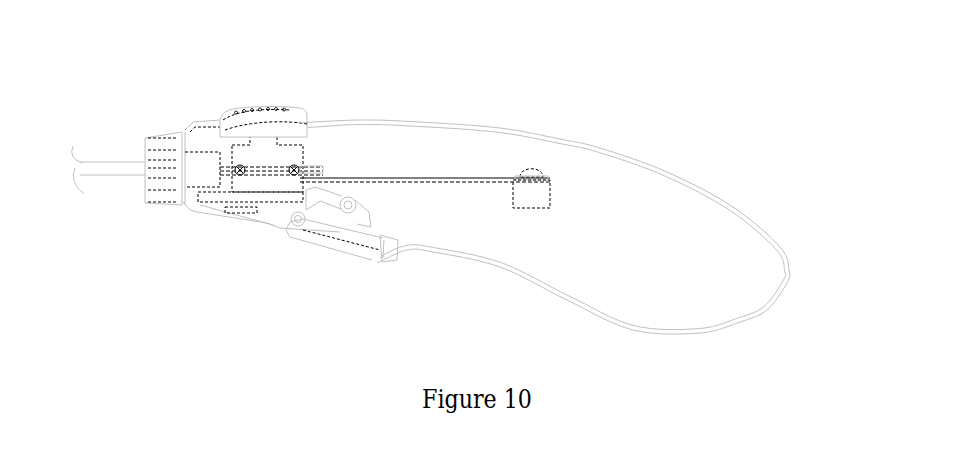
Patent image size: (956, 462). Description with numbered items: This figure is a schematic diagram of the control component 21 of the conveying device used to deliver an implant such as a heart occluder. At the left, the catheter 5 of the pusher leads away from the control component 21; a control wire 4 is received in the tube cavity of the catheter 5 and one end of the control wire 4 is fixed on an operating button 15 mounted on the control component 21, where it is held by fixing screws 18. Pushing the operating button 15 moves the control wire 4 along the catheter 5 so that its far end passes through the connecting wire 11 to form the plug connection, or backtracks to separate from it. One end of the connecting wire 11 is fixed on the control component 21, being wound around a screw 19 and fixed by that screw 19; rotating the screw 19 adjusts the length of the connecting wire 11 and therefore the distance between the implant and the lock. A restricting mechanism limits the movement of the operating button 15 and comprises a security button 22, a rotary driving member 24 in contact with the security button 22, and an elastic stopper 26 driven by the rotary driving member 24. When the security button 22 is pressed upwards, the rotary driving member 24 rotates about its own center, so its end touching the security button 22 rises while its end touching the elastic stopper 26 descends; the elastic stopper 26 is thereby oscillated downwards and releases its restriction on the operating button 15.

The control wire 4 is at (318, 168).
The catheter 5 is at (107, 162).
The connecting wire 11 is at (412, 175).
The operating button 15 is at (255, 110).
The fixing screws 18 is at (297, 165).
The screw 19 is at (545, 168).
The control component 21 is at (736, 188).
The security button 22 is at (360, 255).
The rotary driving member 24 is at (358, 212).
The elastic stopper 26 is at (310, 193).